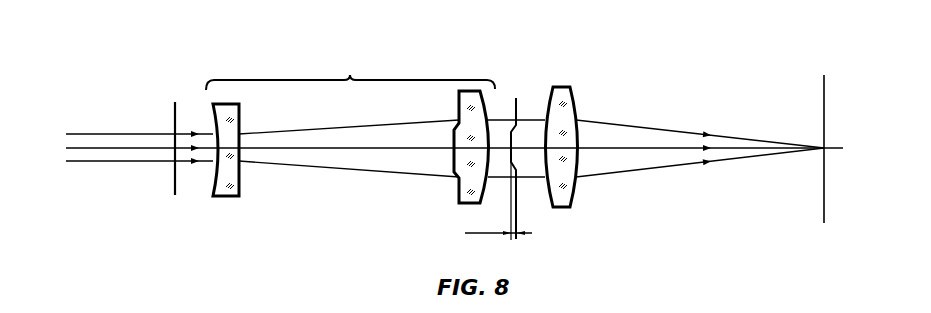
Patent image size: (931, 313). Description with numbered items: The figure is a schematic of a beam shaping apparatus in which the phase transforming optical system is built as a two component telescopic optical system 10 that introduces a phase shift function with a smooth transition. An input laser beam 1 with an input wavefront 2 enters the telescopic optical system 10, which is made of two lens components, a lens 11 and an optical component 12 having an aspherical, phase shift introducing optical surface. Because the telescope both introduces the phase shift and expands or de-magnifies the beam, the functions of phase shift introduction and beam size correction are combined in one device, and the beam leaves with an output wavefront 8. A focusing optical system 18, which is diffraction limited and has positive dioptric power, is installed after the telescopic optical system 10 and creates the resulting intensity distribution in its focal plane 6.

The input laser beam 1 is at (118, 170).
The input wavefront 2 is at (175, 192).
The two component telescopic optical system 10 is at (351, 76).
The lens 11 is at (233, 196).
The optical component having an aspherical optical surface 12 is at (457, 197).
The output wavefront 8 is at (517, 190).
The focusing optical system 18 is at (573, 192).
The focal plane 6 is at (824, 188).